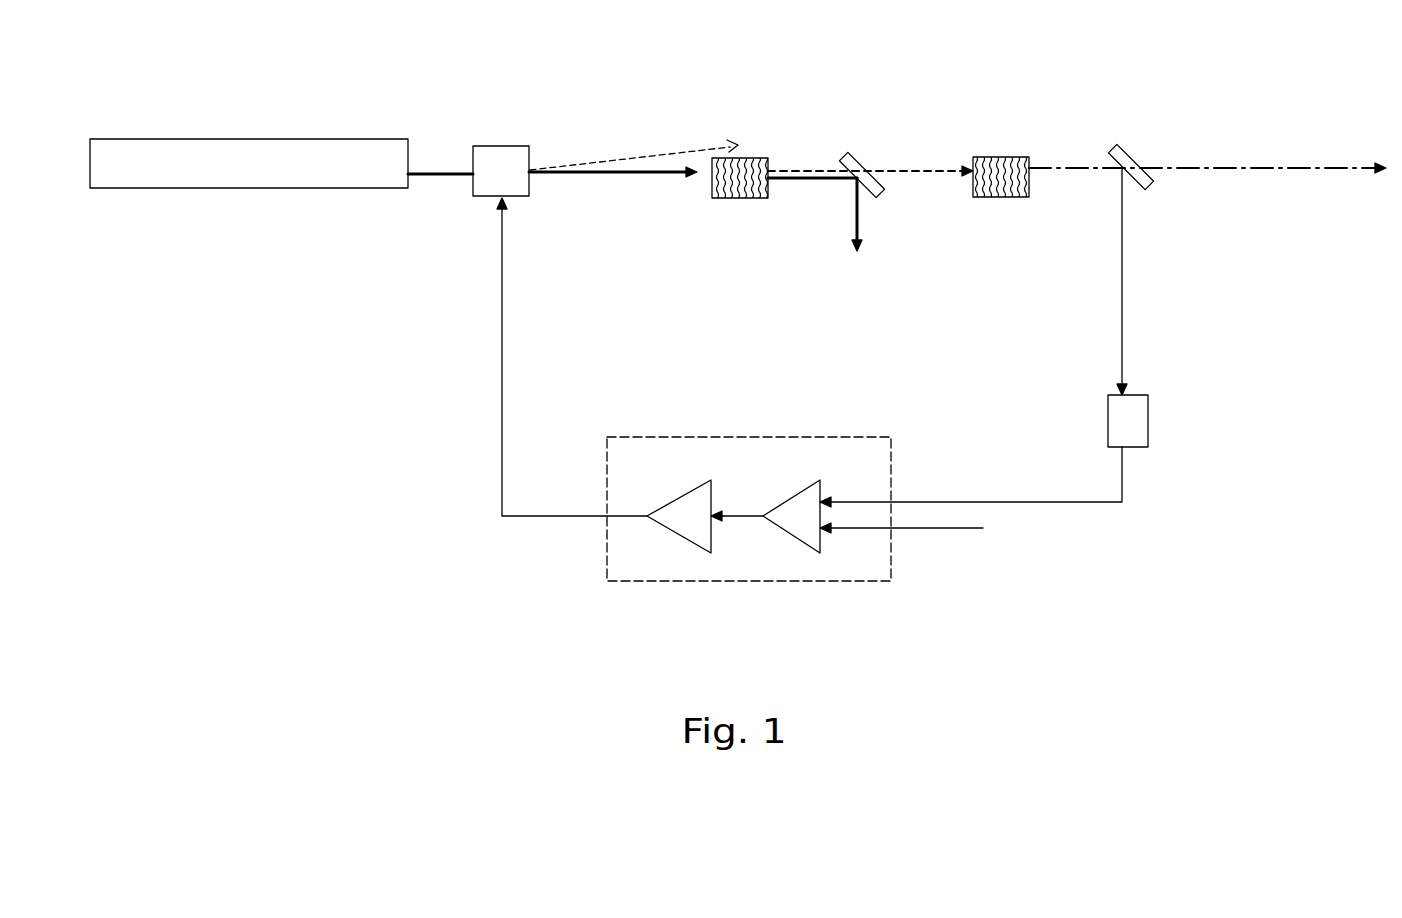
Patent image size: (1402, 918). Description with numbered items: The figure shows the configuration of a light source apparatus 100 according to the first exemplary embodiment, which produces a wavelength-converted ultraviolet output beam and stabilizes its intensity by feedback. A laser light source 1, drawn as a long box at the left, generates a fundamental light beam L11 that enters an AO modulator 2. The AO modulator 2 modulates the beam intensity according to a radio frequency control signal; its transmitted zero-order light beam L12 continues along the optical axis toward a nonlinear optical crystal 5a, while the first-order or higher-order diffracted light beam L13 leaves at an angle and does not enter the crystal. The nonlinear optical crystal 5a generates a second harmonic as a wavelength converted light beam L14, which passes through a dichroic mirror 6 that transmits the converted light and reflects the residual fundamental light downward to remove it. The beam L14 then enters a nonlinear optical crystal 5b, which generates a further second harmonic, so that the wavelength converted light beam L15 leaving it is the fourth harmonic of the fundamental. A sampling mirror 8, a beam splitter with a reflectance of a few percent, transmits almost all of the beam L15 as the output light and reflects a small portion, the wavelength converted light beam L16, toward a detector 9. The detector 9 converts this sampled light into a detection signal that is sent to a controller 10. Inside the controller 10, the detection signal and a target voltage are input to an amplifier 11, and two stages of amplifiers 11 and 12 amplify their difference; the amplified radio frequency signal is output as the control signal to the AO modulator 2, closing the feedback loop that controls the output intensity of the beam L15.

The light source apparatus 100 is at (198, 31).
The laser light source 1 is at (250, 139).
The fundamental light beam L11 is at (423, 172).
The AO modulator 2 is at (520, 197).
The zero-order light beam L12 is at (628, 176).
The first-order or higher-order diffracted light beam L13 is at (620, 160).
The nonlinear optical crystal 5a is at (740, 199).
The dichroic mirror 6 is at (847, 153).
The wavelength converted light beam L14 is at (907, 174).
The nonlinear optical crystal 5b is at (998, 157).
The sampling mirror 8 is at (1130, 157).
The wavelength converted light beam L15 is at (1187, 168).
The wavelength converted light beam L16 is at (1122, 278).
The detector 9 is at (1148, 422).
The controller 10 is at (710, 437).
The amplifier 11 is at (821, 488).
The amplifier 12 is at (712, 488).